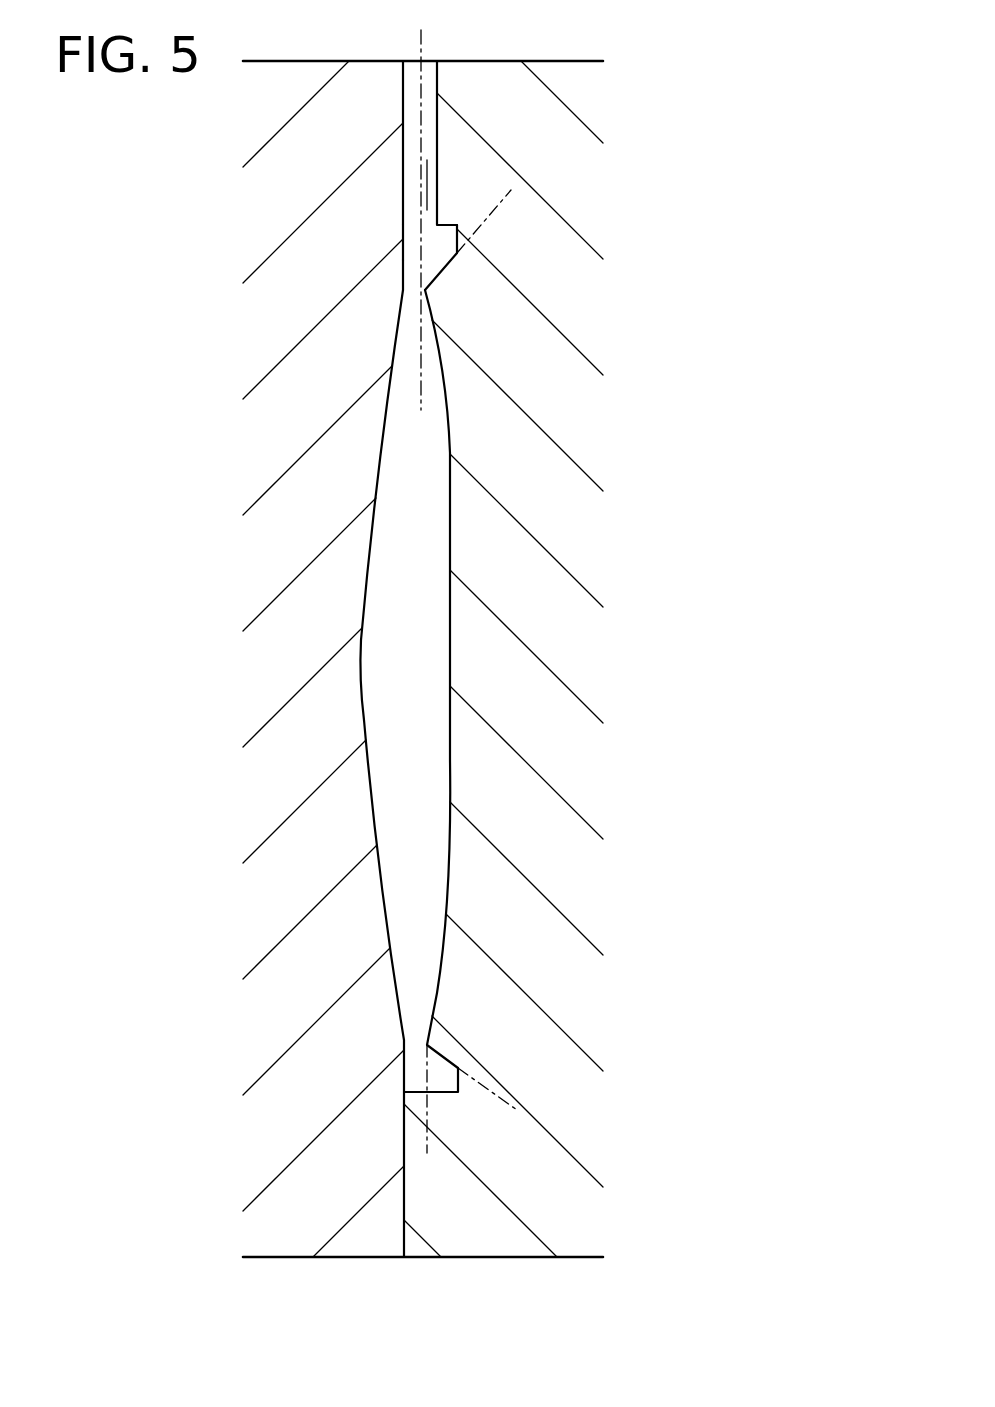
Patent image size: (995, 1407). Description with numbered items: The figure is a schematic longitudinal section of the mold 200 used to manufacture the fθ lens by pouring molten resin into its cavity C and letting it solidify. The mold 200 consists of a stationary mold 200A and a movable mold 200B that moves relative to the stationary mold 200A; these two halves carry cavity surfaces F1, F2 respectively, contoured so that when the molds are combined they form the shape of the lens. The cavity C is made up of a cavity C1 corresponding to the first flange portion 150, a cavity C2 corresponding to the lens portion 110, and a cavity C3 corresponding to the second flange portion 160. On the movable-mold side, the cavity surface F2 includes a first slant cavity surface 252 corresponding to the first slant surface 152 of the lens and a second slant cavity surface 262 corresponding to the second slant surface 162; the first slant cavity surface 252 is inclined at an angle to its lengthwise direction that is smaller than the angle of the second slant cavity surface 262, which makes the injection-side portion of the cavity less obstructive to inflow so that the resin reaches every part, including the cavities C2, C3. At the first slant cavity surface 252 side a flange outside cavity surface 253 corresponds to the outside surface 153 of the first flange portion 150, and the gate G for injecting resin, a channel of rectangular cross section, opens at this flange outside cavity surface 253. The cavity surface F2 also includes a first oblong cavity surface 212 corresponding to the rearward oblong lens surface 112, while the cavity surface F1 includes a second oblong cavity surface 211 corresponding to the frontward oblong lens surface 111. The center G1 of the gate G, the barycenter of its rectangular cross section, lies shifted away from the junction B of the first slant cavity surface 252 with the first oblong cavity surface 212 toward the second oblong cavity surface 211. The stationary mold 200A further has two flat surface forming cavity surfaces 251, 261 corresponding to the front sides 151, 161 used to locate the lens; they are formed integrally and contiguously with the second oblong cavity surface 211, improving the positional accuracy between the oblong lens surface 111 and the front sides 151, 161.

The mold 200 is at (431, 1259).
The stationary mold 200A is at (348, 1238).
The movable mold 200B is at (502, 1232).
The gate G is at (432, 101).
The center of the gate G1 is at (420, 44).
The flange outside cavity surface 253 is at (283, 197).
The outside surface of the first flange portion 153 is at (444, 226).
The flat surface forming cavity surface 251 is at (258, 240).
The front side 151 is at (398, 246).
The cavity C1 is at (273, 279).
The first flange portion 150 is at (437, 249).
The first slant cavity surface 252 is at (584, 259).
The first slant surface 152 is at (445, 270).
The junction B is at (428, 289).
The first oblong cavity surface 212 is at (596, 606).
The oblong lens surface 112 is at (450, 620).
The cavity C is at (414, 674).
The second oblong cavity surface 211 is at (234, 693).
The oblong lens surface 111 is at (362, 698).
The cavity C2 is at (583, 773).
The lens portion 110 is at (420, 785).
The cavity surface F1 is at (402, 884).
The cavity surface F2 is at (430, 971).
The flat surface forming cavity surface 261 is at (257, 1138).
The front side 161 is at (398, 1057).
The second slant cavity surface 262 is at (585, 1030).
The second slant surface 162 is at (443, 1040).
The cavity C3 is at (284, 1089).
The second flange portion 160 is at (440, 1077).